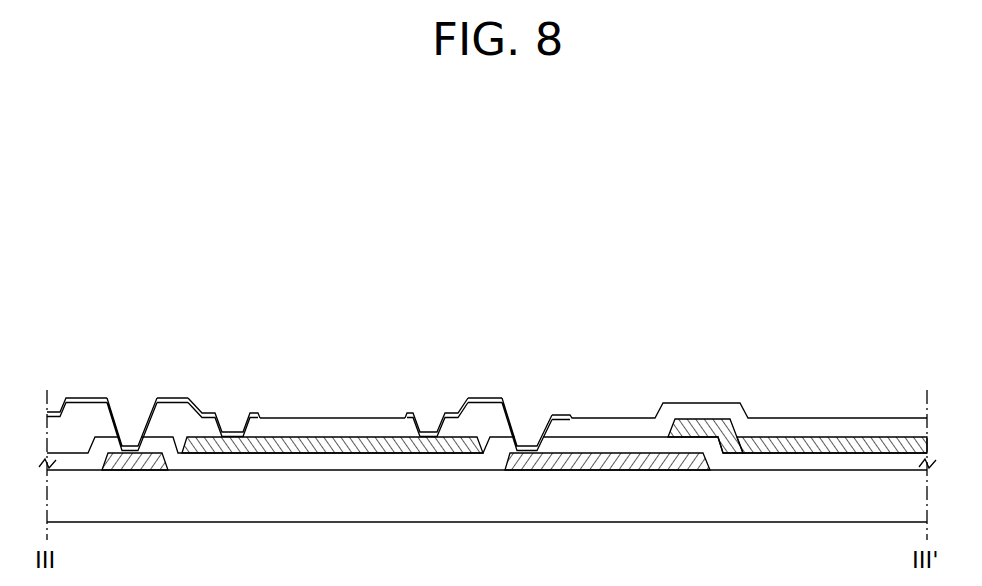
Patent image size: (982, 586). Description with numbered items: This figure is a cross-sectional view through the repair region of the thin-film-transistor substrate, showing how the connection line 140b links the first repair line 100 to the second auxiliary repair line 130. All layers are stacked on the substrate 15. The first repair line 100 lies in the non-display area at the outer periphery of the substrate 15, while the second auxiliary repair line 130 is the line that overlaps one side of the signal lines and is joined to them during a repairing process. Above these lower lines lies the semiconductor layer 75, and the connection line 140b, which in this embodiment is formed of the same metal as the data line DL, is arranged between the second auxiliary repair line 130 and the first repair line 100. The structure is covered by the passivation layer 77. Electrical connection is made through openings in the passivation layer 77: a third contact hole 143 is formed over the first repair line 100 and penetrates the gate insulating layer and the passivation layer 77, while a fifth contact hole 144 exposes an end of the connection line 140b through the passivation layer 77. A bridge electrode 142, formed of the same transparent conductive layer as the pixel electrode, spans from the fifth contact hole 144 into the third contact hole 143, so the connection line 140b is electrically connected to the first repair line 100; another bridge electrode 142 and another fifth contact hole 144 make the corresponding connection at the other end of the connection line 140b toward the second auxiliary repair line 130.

The third contact hole 143 is at (133, 436).
The bridge electrode 142 is at (182, 397).
The fifth contact hole 144 is at (236, 428).
The semiconductor layer 75 is at (254, 465).
The substrate 15 is at (477, 503).
The first repair line 100 is at (130, 461).
The second auxiliary repair line 130 is at (606, 461).
The first electrode (gate electrode) 140b is at (356, 444).
The data line DL is at (742, 447).
The passivation layer 77 is at (885, 455).